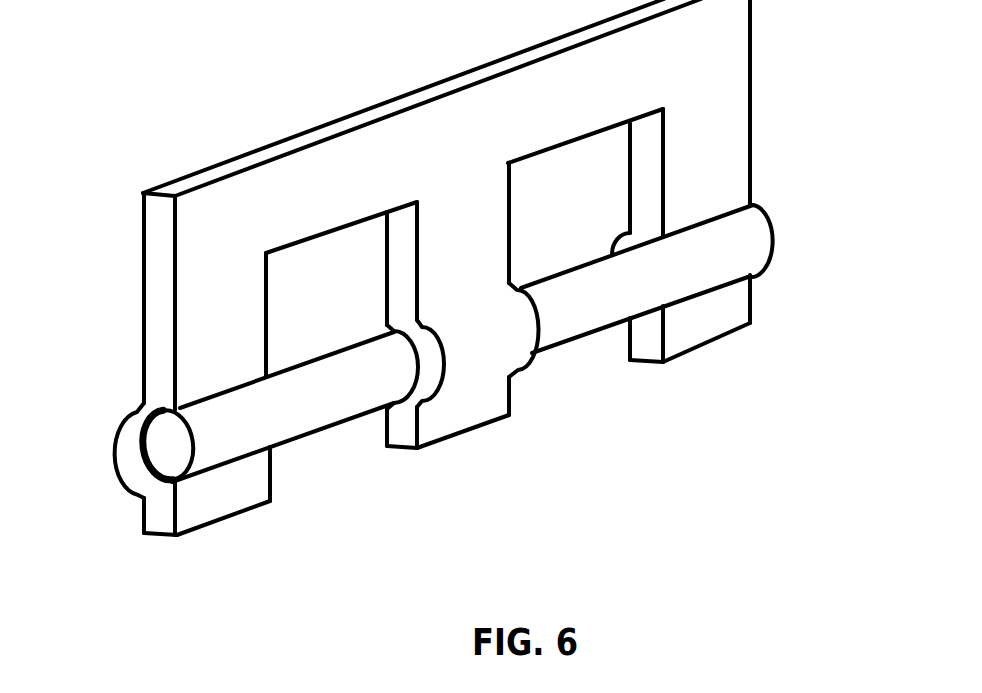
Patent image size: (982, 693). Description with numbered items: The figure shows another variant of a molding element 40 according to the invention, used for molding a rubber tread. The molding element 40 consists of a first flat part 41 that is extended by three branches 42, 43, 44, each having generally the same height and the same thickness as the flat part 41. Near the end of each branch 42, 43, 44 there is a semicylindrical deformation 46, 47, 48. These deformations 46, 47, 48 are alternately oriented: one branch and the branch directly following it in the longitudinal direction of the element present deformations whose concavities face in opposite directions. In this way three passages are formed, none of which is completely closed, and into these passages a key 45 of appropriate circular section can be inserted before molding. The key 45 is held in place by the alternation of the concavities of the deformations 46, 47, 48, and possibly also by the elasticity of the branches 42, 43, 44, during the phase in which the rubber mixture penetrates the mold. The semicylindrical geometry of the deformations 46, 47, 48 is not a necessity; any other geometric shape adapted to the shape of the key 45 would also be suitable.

The molding element 40 is at (449, 267).
The first flat part 41 is at (420, 145).
The branch 42 is at (162, 297).
The branch 43 is at (435, 425).
The branch 44 is at (695, 323).
The key 45 is at (288, 418).
The semicylindrical deformation 46 is at (126, 423).
The semicylindrical deformation 47 is at (508, 352).
The semicylindrical deformation 48 is at (623, 237).